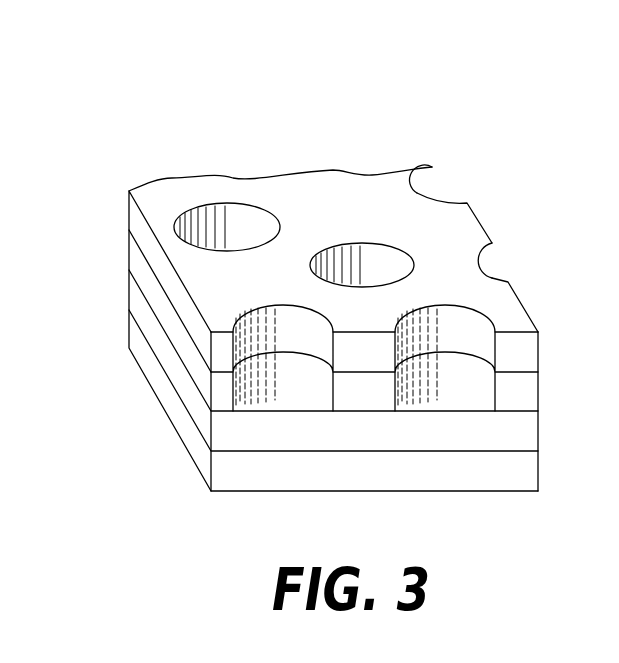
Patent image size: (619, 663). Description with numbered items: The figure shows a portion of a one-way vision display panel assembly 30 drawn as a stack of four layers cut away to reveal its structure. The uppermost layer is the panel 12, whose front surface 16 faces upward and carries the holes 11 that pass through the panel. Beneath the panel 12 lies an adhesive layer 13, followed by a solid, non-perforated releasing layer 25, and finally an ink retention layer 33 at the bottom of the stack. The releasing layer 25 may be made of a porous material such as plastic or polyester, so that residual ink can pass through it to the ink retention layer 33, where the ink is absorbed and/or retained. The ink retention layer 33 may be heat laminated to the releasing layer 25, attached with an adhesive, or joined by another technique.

The one-way vision display panel assembly 30 is at (543, 130).
The holes 11 is at (246, 203).
The panel 12 is at (133, 216).
The adhesive layer 13 is at (133, 257).
The solid releasing layer 25 is at (133, 297).
The ink retention layer 33 is at (133, 337).
The front surface 16 is at (466, 228).